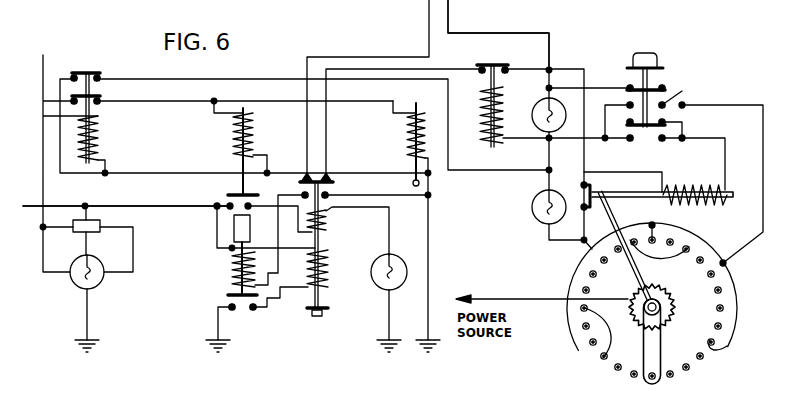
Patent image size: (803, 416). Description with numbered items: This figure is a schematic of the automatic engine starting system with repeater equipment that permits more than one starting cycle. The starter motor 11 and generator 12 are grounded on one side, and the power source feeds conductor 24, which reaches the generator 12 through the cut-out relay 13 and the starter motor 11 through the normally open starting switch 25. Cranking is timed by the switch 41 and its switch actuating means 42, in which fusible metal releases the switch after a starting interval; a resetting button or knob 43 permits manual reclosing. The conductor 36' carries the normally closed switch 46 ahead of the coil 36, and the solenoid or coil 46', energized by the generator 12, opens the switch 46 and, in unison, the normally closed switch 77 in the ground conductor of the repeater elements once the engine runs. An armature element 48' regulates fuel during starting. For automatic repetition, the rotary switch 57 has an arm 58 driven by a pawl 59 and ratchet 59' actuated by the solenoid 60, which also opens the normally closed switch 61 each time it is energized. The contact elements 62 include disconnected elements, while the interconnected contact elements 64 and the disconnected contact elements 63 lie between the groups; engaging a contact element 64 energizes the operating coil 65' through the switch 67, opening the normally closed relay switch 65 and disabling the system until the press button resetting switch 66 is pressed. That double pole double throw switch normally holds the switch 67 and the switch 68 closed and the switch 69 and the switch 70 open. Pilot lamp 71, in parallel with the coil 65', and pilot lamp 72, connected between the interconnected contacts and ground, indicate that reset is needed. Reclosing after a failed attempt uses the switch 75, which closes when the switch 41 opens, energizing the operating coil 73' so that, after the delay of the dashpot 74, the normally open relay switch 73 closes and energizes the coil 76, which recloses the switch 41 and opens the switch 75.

The normally closed switch 77 is at (78, 73).
The normally closed switch 46 is at (102, 94).
The conductor 36' is at (245, 94).
The solenoid or coil 46' is at (109, 118).
The coil 36 is at (230, 151).
The starting switch 25 is at (228, 195).
The conductor 24 is at (98, 207).
The cut-out relay 13 is at (91, 229).
The generator 12 is at (92, 277).
The dashpot 74 is at (233, 229).
The operating coil 73' is at (226, 269).
The normally open relay switch 73 is at (243, 314).
The switch 41 is at (322, 181).
The switch 75 is at (327, 195).
The switch actuating means 42 is at (322, 227).
The coil 76 is at (328, 258).
The resetting button or knob 43 is at (319, 325).
The starter motor 11 is at (396, 257).
The armature element 48' is at (438, 152).
The rotary switch 57 is at (448, 8).
The normally closed relay switch 65 is at (493, 57).
The operating coil 65' is at (506, 106).
The pilot lamp 71 is at (533, 122).
The pilot lamp 72 is at (534, 215).
The normally closed switch 61 is at (583, 193).
The switch 67 is at (627, 86).
The press button resetting switch 66 is at (688, 71).
The switch 69 is at (683, 91).
The switch 68 is at (664, 118).
The switch 70 is at (633, 141).
The solenoid 60 is at (690, 187).
The pawl 59 is at (637, 249).
The ratchet 59' is at (667, 304).
The arm 58 is at (650, 353).
The contact elements 62 is at (553, 276).
The contact elements 63 is at (672, 241).
The contact elements 64 is at (651, 224).